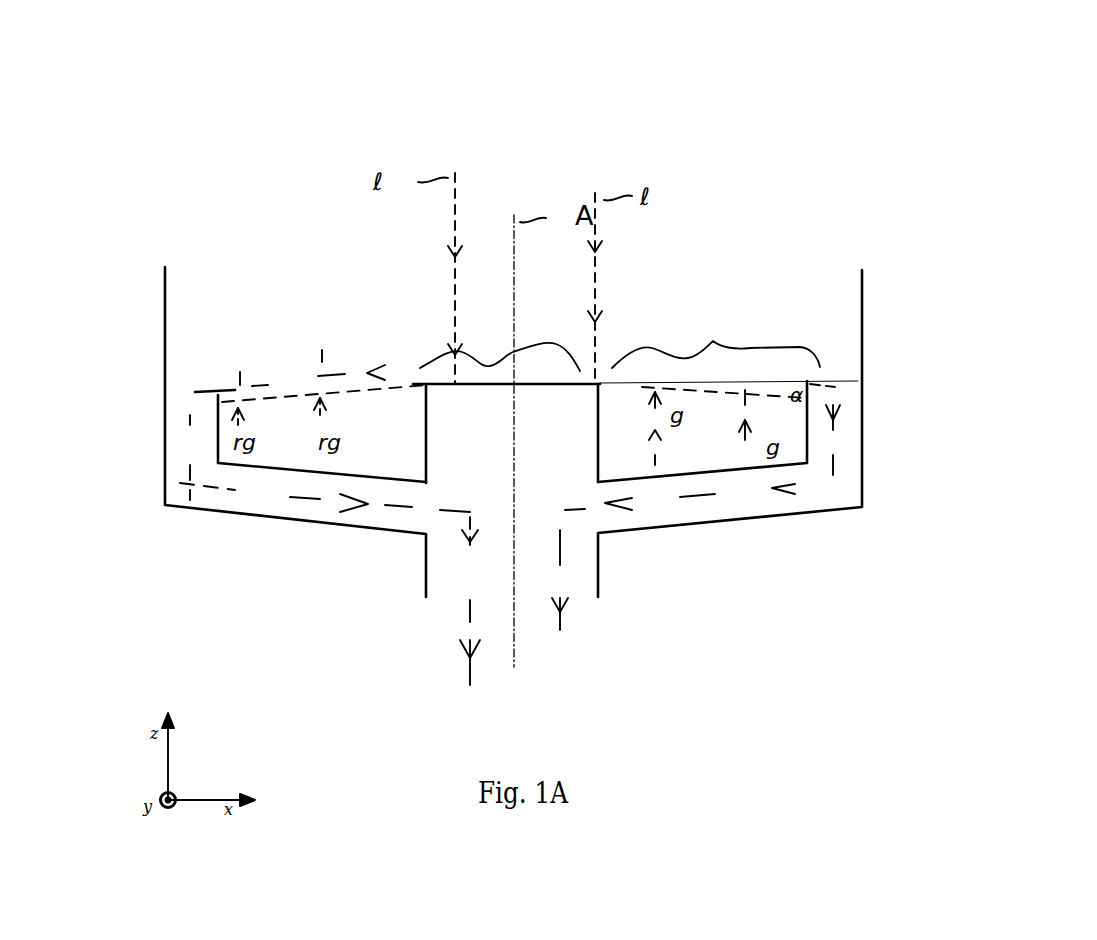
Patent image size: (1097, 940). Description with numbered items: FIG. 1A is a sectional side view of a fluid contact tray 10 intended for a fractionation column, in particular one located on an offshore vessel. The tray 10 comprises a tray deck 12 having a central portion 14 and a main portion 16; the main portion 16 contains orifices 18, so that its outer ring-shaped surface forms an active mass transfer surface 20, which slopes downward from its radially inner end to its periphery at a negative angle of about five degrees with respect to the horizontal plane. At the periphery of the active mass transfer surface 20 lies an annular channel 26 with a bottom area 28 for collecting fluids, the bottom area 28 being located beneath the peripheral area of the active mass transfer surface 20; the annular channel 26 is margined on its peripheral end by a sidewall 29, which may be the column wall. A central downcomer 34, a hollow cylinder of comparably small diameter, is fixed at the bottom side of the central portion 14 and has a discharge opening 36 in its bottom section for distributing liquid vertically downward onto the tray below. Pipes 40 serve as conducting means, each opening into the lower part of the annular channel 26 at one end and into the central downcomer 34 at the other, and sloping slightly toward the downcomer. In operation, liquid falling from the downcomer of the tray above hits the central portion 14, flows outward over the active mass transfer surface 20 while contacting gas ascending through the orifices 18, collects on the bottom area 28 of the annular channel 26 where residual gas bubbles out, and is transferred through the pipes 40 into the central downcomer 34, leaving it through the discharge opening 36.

The fluid contact tray 10 is at (757, 128).
The tray deck 12 is at (598, 383).
The central portion 14 is at (500, 346).
The main portion 16 is at (709, 398).
The orifices 18 is at (245, 400).
The active mass transfer surface 20 is at (300, 383).
The annular channel 26 is at (198, 432).
The bottom area 28 is at (180, 481).
The sidewall 29 is at (165, 466).
The central downcomer 34 is at (472, 568).
The discharge opening 36 is at (462, 595).
The pipes 40 is at (700, 515).